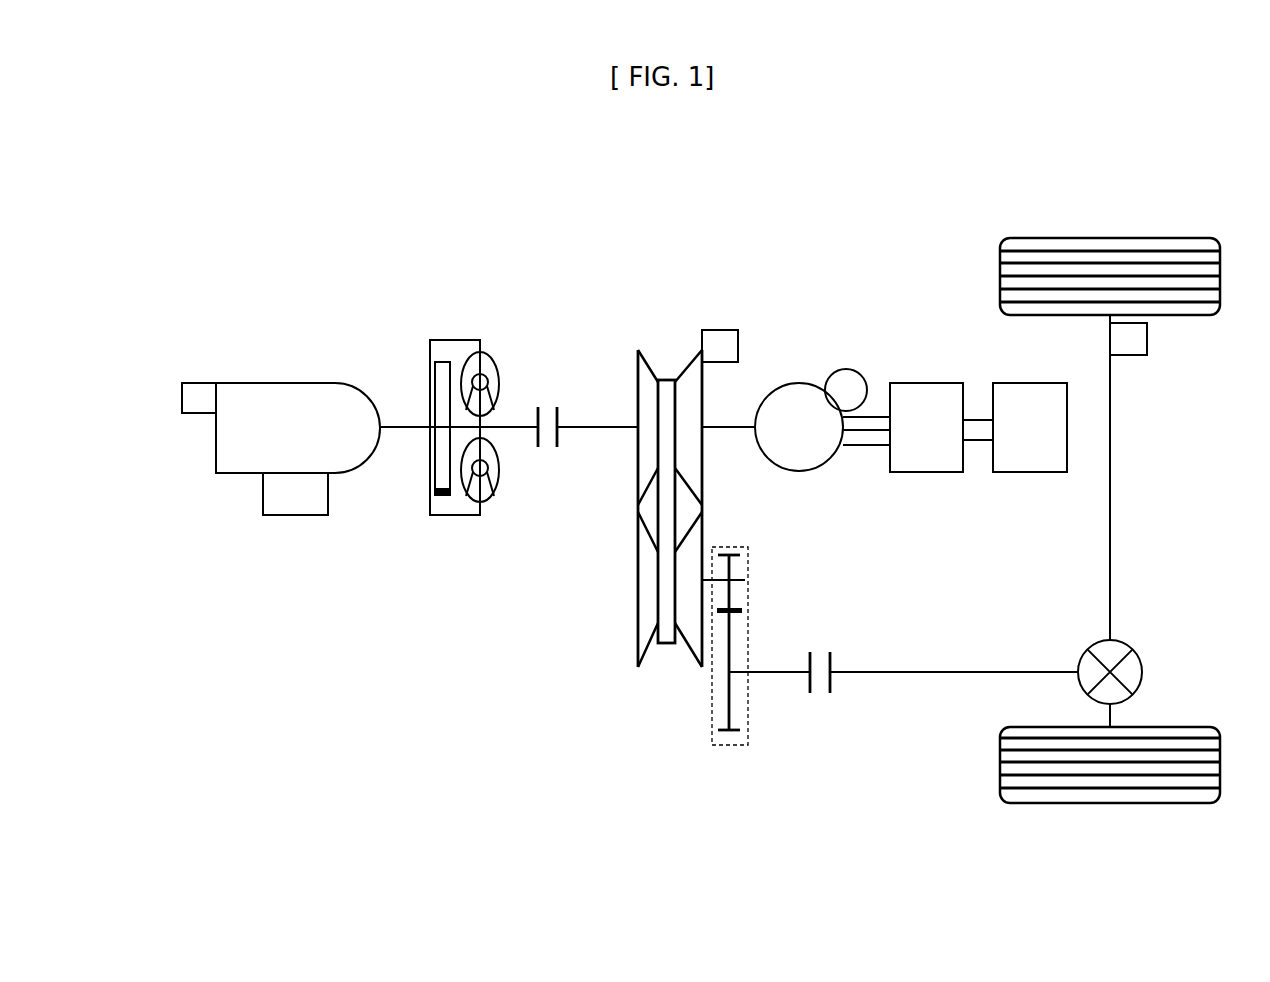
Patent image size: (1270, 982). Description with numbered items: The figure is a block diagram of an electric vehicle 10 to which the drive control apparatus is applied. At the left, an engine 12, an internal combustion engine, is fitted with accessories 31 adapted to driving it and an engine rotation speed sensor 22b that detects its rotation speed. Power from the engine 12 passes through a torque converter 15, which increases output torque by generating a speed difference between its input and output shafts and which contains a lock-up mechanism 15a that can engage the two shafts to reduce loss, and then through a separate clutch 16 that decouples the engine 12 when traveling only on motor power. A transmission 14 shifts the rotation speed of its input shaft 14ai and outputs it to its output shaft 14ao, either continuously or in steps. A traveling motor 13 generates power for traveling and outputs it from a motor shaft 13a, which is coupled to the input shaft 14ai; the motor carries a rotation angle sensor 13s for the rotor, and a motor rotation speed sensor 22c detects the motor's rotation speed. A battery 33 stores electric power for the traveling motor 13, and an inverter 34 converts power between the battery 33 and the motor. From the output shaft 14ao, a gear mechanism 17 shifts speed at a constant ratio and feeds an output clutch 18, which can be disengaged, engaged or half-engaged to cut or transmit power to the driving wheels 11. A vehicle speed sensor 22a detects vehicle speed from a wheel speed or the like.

The electric vehicle 10 is at (786, 216).
The driving wheels 11 is at (1147, 238).
The engine 12 is at (268, 383).
The traveling motor 13 is at (799, 383).
The motor shaft 13a is at (726, 430).
The rotation angle sensor 13s is at (863, 378).
The transmission 14 is at (631, 655).
The input shaft 14ai is at (632, 432).
The output shaft 14ao is at (745, 575).
The torque converter 15 is at (458, 340).
The lock-up mechanism 15a is at (436, 372).
The separate clutch 16 is at (555, 407).
The gear mechanism 17 is at (748, 615).
The output clutch 18 is at (816, 654).
The vehicle speed sensor 22a is at (1147, 355).
The engine rotation speed sensor 22b is at (202, 382).
The motor rotation speed sensor 22c is at (732, 317).
The accessories 31 is at (297, 517).
The battery 33 is at (1033, 383).
The inverter 34 is at (930, 383).